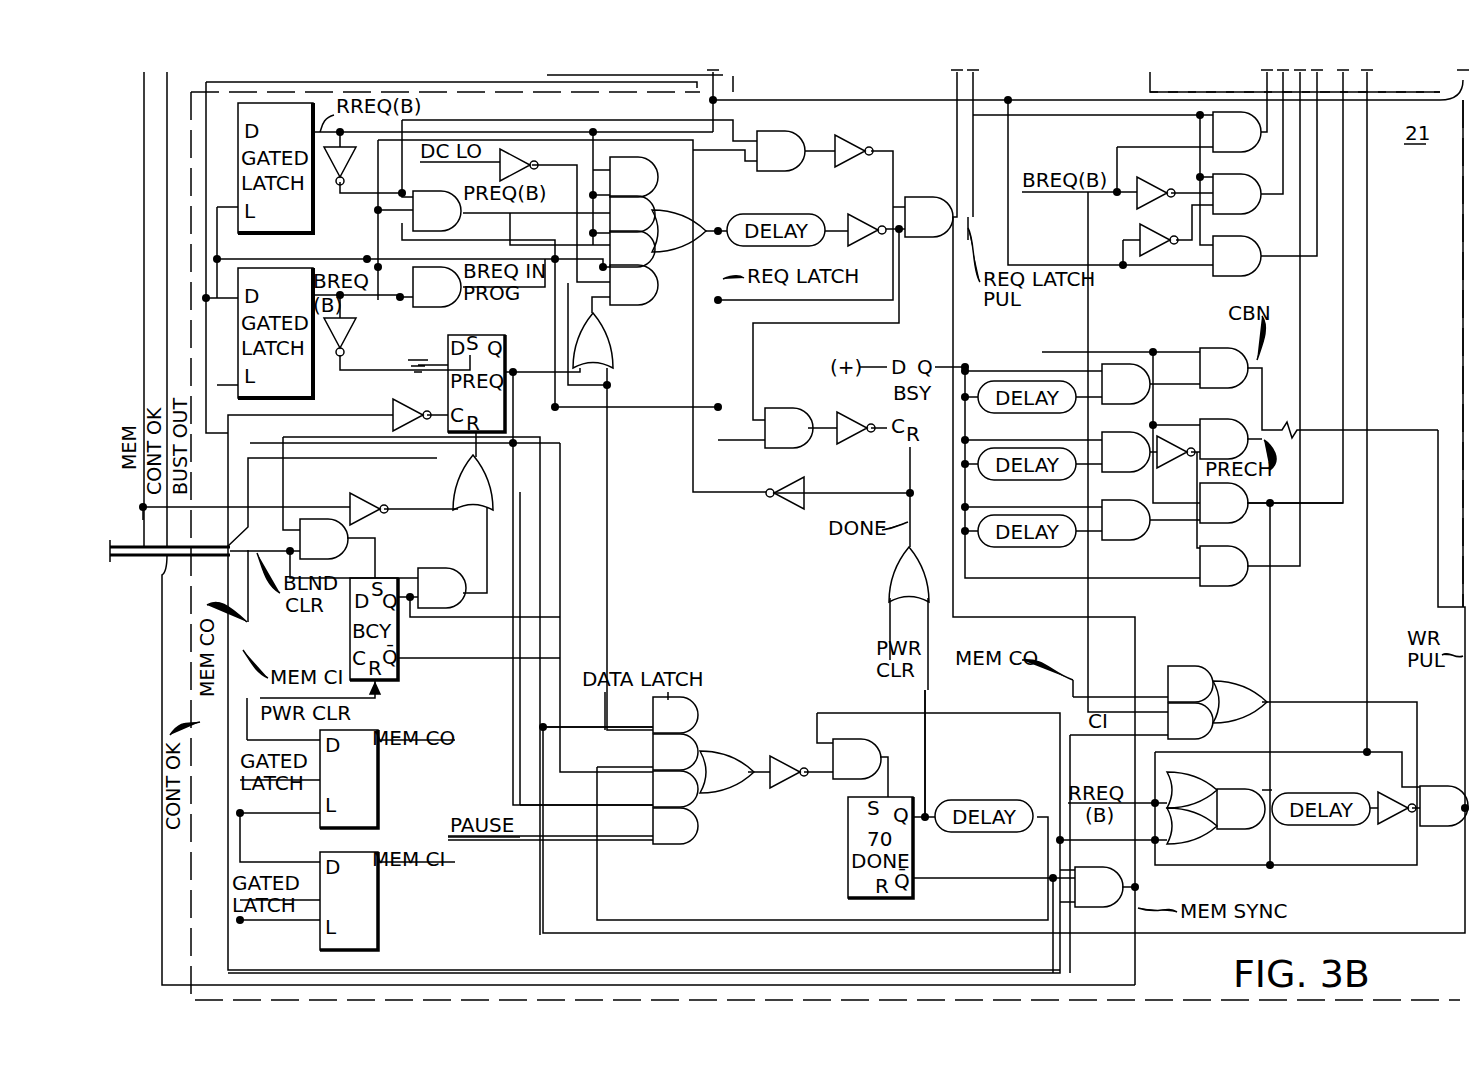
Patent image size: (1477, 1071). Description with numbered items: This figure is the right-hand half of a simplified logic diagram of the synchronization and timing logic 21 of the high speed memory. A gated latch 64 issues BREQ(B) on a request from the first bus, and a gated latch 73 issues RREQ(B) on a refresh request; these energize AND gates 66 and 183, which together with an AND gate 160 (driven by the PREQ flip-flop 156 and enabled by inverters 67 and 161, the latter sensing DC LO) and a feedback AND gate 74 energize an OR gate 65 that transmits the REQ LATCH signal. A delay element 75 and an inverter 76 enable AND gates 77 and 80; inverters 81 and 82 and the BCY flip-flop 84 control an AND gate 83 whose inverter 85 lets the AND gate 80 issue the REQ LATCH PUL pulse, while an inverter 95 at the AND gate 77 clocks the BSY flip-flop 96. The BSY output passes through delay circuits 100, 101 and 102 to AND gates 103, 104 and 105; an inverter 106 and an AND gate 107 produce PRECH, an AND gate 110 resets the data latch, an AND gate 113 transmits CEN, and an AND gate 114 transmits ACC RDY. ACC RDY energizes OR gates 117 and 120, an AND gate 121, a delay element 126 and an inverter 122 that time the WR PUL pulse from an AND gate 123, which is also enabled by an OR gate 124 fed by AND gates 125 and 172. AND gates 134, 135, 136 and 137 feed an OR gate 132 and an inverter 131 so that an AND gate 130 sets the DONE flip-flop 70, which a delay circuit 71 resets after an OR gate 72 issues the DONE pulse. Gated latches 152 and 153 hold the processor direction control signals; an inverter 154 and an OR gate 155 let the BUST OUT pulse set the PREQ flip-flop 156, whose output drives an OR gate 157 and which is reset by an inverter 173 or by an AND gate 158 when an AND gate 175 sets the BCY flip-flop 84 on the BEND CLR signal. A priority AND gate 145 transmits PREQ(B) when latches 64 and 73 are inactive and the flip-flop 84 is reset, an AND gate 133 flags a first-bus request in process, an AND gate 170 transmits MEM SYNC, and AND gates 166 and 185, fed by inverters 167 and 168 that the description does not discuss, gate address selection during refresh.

The gated latch 73 is at (238, 168).
The gated latch 64 is at (313, 393).
The inverter 81 is at (352, 158).
The inverter 82 is at (358, 332).
The AND gate 145 is at (437, 211).
The AND gate 133 is at (437, 287).
The inverter 161 is at (537, 160).
The AND gate 183 is at (634, 177).
The AND gate 66 is at (632, 214).
The AND gate 74 is at (632, 249).
The AND gate 160 is at (634, 285).
The OR gate 65 is at (679, 231).
The delay element 75 is at (778, 214).
The inverter 76 is at (863, 214).
The AND gate 80 is at (929, 217).
The AND gate 83 is at (781, 151).
The inverter 85 is at (858, 136).
The BSY flip-flop 96 is at (920, 345).
The PREQ flip-flop 156 is at (480, 335).
The inverter 173 is at (412, 401).
The OR gate 157 is at (593, 340).
The OR gate 155 is at (473, 482).
The inverter 154 is at (368, 495).
The AND gate 175 is at (324, 539).
The AND gate 158 is at (442, 588).
The termination cycle (BCY) flip-flop 84 is at (350, 634).
The gated latch 152 is at (378, 776).
The gated latch 153 is at (378, 905).
The AND gate 136 is at (675, 715).
The AND gate 135 is at (675, 752).
The AND gate 134 is at (675, 789).
The AND gate 137 is at (675, 826).
The OR gate 132 is at (727, 772).
The inverter 131 is at (787, 755).
The AND gate 130 is at (857, 759).
The DONE flip-flop 70 is at (880, 847).
The delay circuit 71 is at (975, 834).
The AND gate 170 is at (1099, 887).
The AND gate 172 is at (1190, 684).
The AND gate 125 is at (1190, 721).
The OR gate 124 is at (1240, 702).
The OR gate 117 is at (1192, 790).
The OR gate 120 is at (1192, 826).
The AND gate 121 is at (1241, 809).
The delay element 126 is at (1308, 793).
The inverter 122 is at (1388, 826).
The AND gate 123 is at (1444, 806).
The AND gate 166 is at (1237, 194).
The AND gate 185 is at (1237, 256).
The inverter 167 is at (1156, 186).
The inverter 168 is at (1140, 241).
The synchronization and timing logic 21 is at (1426, 144).
The delay circuit 100 is at (1015, 381).
The delay circuit 101 is at (1020, 448).
The delay circuit 102 is at (1008, 547).
The AND gate 103 is at (1126, 384).
The AND gate 104 is at (1126, 452).
The AND gate 105 is at (1126, 520).
The inverter 106 is at (1172, 468).
The AND gate 113 is at (1224, 368).
The AND gate 107 is at (1224, 439).
The AND gate 114 is at (1224, 503).
The AND gate 110 is at (1224, 566).
The AND gate 77 is at (789, 428).
The inverter 95 is at (852, 446).
The inverter 67 is at (790, 510).
The OR gate 72 is at (909, 574).